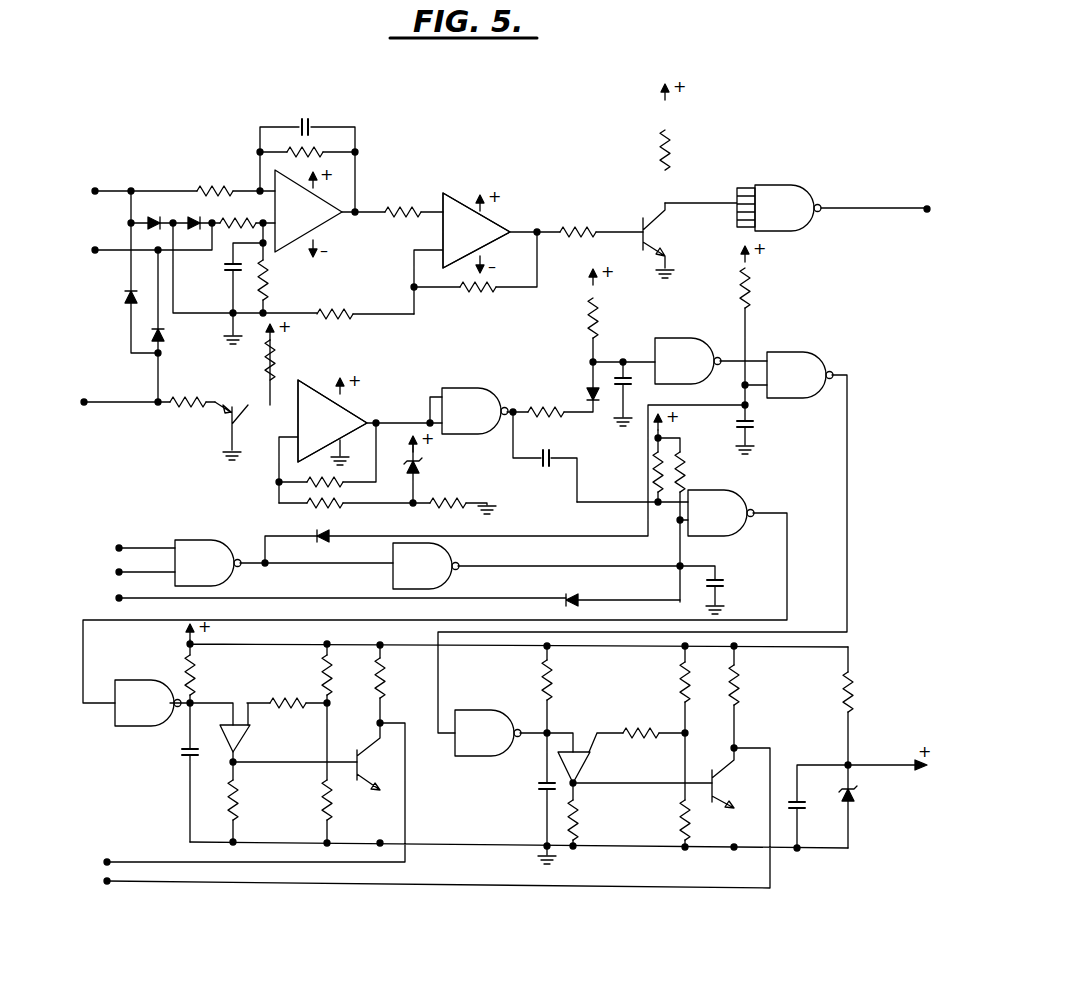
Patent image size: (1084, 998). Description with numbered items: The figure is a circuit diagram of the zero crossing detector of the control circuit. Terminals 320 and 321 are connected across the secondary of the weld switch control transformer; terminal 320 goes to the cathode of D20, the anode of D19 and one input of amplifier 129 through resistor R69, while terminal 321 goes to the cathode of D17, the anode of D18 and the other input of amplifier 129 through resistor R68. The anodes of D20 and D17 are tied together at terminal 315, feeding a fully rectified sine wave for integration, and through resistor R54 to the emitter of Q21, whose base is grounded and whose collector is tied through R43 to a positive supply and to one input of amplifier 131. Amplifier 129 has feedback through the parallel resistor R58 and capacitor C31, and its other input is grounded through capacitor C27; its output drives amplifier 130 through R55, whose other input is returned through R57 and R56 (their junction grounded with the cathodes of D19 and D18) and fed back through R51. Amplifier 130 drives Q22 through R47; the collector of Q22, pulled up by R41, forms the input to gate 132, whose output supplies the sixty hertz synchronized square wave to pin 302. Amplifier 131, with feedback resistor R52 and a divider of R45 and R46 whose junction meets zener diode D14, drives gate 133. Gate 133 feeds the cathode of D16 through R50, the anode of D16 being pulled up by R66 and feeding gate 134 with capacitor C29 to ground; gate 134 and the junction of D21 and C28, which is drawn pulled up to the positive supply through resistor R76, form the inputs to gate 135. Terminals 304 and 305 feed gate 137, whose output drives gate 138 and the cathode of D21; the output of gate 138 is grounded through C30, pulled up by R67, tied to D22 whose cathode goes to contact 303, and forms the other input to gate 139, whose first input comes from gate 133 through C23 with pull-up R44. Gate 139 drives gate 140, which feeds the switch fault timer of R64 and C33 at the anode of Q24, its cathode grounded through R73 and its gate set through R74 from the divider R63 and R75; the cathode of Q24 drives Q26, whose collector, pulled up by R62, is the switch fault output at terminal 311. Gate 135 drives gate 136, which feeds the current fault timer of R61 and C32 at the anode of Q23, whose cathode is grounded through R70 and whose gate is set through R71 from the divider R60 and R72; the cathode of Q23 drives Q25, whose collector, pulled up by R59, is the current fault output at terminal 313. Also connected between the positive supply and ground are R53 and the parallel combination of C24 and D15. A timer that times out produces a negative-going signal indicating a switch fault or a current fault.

The terminal 320 is at (90, 190).
The terminal 321 is at (84, 251).
The terminal 315 is at (80, 400).
The terminal 304 is at (116, 548).
The terminal 305 is at (116, 574).
The terminal 303 is at (116, 598).
The switch fault output terminal 311 is at (101, 861).
The current fault output terminal 313 is at (107, 881).
The terminal 302 is at (935, 190).
The amplifier 129 is at (308, 211).
The amplifier 130 is at (476, 230).
The amplifier 131 is at (332, 421).
The gate 132 is at (788, 208).
The gate 133 is at (475, 411).
The gate 134 is at (688, 361).
The gate 135 is at (800, 375).
The gate 136 is at (488, 733).
The gate 137 is at (208, 563).
The gate 138 is at (426, 566).
The gate 139 is at (721, 513).
The gate 140 is at (148, 703).
The resistor R69 is at (224, 184).
The resistor R58 is at (328, 152).
The resistor R68 is at (246, 221).
The resistor R55 is at (408, 210).
The resistor R56 is at (272, 272).
The resistor R57 is at (330, 314).
The resistor R43 is at (276, 341).
The resistor R51 is at (481, 293).
The resistor R47 is at (592, 231).
The resistor R41 is at (672, 158).
The resistor R66 is at (586, 336).
The resistor R76 is at (752, 301).
The resistor R54 is at (196, 400).
The resistor R50 is at (552, 410).
The resistor R44 is at (656, 476).
The resistor R67 is at (684, 479).
The resistor R52 is at (308, 482).
The resistor R45 is at (310, 510).
The resistor R46 is at (452, 500).
The resistor R64 is at (194, 684).
The resistor R63 is at (322, 680).
The resistor R74 is at (288, 703).
The resistor R62 is at (380, 696).
The resistor R73 is at (236, 811).
The resistor R75 is at (324, 818).
The resistor R61 is at (550, 694).
The resistor R60 is at (682, 693).
The resistor R71 is at (648, 730).
The resistor R59 is at (740, 700).
The resistor R53 is at (852, 704).
The resistor R70 is at (578, 830).
The resistor R72 is at (676, 820).
The capacitor C31 is at (309, 116).
The capacitor C27 is at (226, 274).
The capacitor C29 is at (630, 368).
The capacitor C28 is at (754, 428).
The capacitor C23 is at (545, 448).
The capacitor C30 is at (724, 588).
The capacitor C33 is at (180, 758).
The capacitor C32 is at (536, 791).
The capacitor C24 is at (804, 814).
The diode D19 is at (152, 219).
The diode D18 is at (189, 221).
The diode D20 is at (124, 296).
The diode D17 is at (162, 342).
The diode D16 is at (588, 390).
The zener diode D14 is at (422, 468).
The diode D21 is at (332, 538).
The diode D22 is at (570, 599).
The diode D15 is at (858, 800).
The transistor Q22 is at (652, 238).
The transistor Q21 is at (227, 430).
The transistor Q24 is at (236, 746).
The transistor Q26 is at (354, 756).
The transistor Q23 is at (582, 770).
The transistor Q25 is at (716, 800).